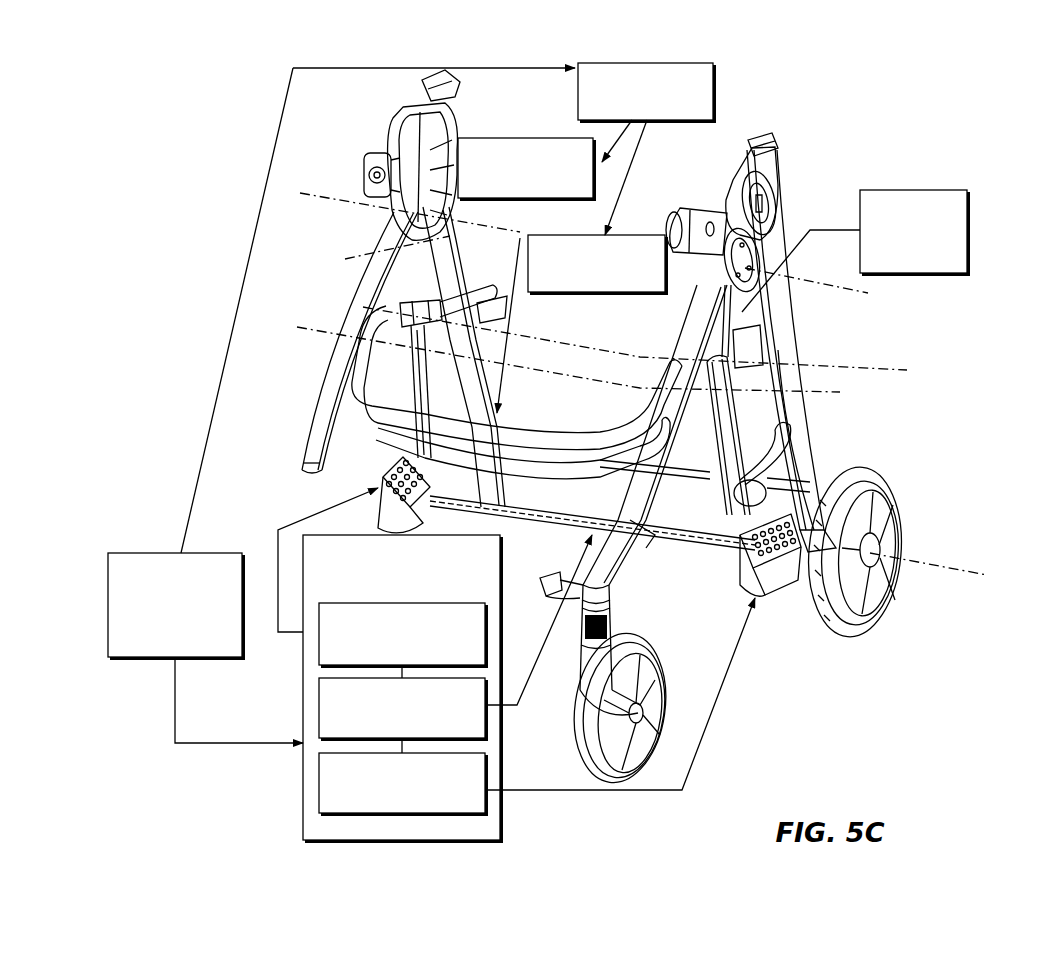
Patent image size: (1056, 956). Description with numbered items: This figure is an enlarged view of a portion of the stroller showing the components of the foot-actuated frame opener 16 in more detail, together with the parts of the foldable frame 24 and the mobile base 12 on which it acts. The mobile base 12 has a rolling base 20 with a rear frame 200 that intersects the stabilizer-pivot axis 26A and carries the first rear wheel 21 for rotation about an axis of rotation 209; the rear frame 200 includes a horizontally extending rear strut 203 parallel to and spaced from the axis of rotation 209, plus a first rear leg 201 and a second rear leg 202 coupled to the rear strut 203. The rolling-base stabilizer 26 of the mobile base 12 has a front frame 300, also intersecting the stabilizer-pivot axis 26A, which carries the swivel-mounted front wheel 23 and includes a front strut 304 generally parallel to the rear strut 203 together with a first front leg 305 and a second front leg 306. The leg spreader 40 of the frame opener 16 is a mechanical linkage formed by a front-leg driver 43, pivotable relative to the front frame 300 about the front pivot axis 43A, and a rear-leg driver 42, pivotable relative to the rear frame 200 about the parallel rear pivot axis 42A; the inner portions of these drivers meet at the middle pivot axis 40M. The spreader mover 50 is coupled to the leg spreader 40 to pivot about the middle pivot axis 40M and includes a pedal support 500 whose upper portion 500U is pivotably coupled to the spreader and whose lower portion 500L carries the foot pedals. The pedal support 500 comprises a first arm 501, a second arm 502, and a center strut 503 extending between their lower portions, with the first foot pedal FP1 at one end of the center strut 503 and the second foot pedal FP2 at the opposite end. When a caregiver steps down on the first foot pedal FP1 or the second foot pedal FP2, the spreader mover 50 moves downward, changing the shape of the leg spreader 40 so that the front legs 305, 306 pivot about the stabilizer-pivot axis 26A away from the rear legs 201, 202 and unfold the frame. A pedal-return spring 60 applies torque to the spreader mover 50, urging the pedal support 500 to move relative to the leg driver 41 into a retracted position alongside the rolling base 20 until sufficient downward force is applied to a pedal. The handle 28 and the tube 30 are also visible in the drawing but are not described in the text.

The mobile base 12 is at (795, 192).
The foot-actuated frame opener 16 is at (107, 613).
The rolling base 20 is at (828, 466).
The first rear wheel 21 is at (870, 622).
The front wheel 23 is at (578, 747).
The foldable frame 24 is at (212, 183).
The rolling-base stabilizer 26 is at (352, 262).
The stabilizer-pivot axis 26A is at (300, 193).
The handle 28 is at (410, 88).
The front leg tube 30 is at (634, 562).
The leg spreader 40 is at (717, 97).
The middle pivot axis 40M is at (363, 307).
The leg driver 41 is at (745, 333).
The rear-leg driver 42 is at (637, 235).
The rear pivot axis 42A is at (345, 259).
The front-leg driver 43 is at (490, 138).
The front pivot axis 43A is at (297, 327).
The spreader mover 50 is at (500, 590).
The pedal-return spring 60 is at (968, 230).
The rear frame 200 is at (792, 302).
The first rear leg 201 is at (812, 437).
The second rear leg 202 is at (497, 278).
The rear strut 203 is at (716, 487).
The axis of rotation 209 is at (965, 567).
The front frame 300 is at (644, 554).
The front strut 304 is at (556, 582).
The first front leg 305 is at (634, 535).
The second front leg 306 is at (310, 460).
The pedal support 500 is at (317, 714).
The upper portion 500U is at (707, 430).
The lower portion 500L is at (698, 557).
The first arm 501 is at (728, 420).
The second arm 502 is at (405, 404).
The center strut 503 is at (716, 476).
The first foot pedal FP1 is at (318, 781).
The second foot pedal FP2 is at (418, 602).